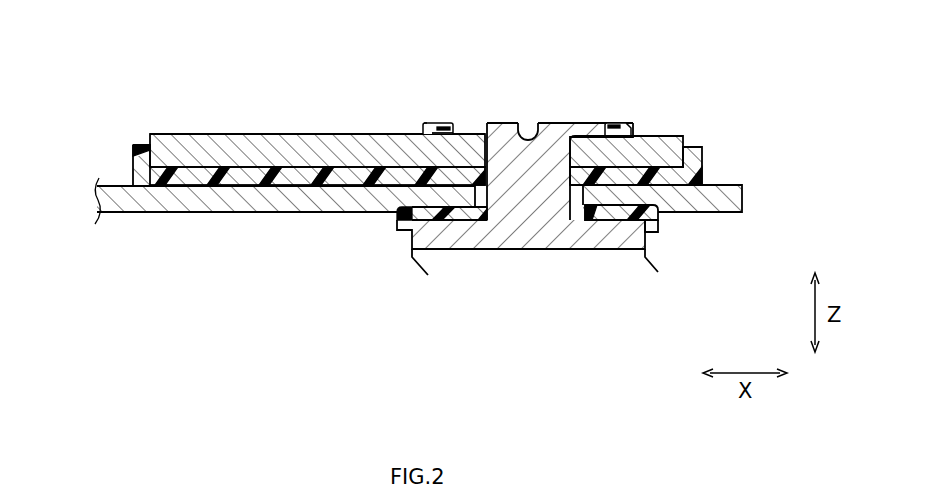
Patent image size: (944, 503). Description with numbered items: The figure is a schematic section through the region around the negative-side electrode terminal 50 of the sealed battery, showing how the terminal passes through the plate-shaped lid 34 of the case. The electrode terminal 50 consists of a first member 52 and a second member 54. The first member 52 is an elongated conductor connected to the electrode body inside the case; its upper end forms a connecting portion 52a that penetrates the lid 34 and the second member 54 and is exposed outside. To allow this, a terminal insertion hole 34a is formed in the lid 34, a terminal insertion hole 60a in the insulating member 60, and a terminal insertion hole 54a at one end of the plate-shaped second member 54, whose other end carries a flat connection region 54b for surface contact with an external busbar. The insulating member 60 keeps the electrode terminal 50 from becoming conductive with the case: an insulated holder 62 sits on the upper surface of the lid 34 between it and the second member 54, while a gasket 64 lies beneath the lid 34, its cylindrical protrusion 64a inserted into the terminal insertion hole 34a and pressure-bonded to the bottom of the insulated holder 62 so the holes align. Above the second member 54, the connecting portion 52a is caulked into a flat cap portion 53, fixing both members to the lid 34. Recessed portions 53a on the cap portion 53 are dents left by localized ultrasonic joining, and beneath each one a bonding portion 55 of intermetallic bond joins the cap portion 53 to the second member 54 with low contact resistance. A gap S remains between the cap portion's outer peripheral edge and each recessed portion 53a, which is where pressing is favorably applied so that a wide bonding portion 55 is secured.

The electrode terminal 50 is at (177, 82).
The second member 54 is at (307, 134).
The connection region 54b is at (235, 134).
The terminal insertion hole 54a is at (577, 138).
The lid 34 is at (187, 213).
The terminal insertion hole 34a is at (583, 196).
The first member 52 is at (412, 237).
The connecting portion 52a is at (497, 150).
The cap portion 53 is at (547, 122).
The recessed portion 53a is at (435, 118).
The bonding portion 55 is at (447, 130).
The gap S is at (425, 122).
The insulated holder 62 is at (702, 163).
The gasket 64 is at (660, 222).
The cylindrical protrusion 64a is at (490, 203).
The insulating member 60 is at (807, 163).
The terminal insertion hole 60a is at (565, 177).